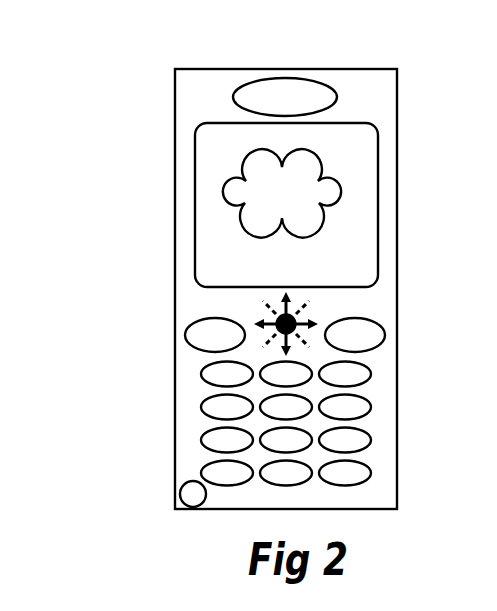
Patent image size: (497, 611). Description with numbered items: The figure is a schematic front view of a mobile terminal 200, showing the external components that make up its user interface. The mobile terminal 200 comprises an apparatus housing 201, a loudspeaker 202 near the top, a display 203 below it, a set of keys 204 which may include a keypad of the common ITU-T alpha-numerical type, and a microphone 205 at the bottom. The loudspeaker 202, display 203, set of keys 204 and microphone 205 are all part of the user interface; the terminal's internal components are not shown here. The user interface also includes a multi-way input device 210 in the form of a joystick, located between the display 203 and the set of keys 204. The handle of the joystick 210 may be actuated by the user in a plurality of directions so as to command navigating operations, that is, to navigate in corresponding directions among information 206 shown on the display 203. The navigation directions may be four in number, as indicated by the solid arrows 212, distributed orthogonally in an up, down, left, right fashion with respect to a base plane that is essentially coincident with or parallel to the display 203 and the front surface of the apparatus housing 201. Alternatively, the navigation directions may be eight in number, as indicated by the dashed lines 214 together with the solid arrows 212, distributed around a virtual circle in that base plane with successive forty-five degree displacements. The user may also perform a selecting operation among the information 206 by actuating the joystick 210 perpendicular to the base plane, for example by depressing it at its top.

The mobile terminal 200 is at (138, 74).
The apparatus housing 201 is at (385, 78).
The loudspeaker 202 is at (275, 88).
The display 203 is at (205, 192).
The set of keys 204 is at (207, 377).
The microphone 205 is at (190, 495).
The information 206 is at (301, 206).
The multi-way input device 210 is at (277, 318).
The solid arrows 212 is at (289, 297).
The dashed lines 214 is at (303, 312).